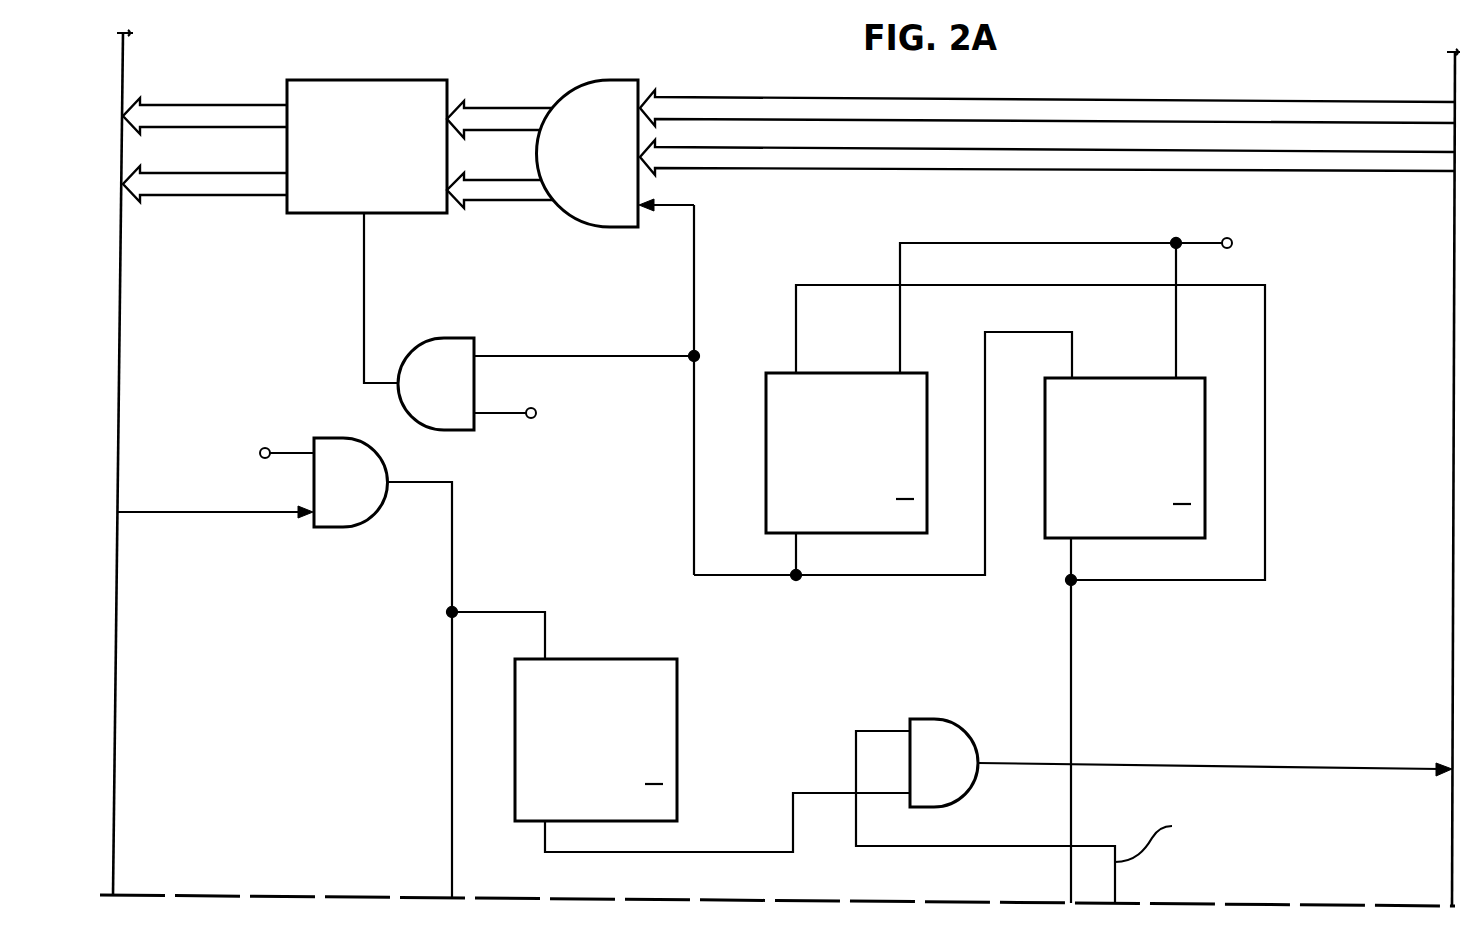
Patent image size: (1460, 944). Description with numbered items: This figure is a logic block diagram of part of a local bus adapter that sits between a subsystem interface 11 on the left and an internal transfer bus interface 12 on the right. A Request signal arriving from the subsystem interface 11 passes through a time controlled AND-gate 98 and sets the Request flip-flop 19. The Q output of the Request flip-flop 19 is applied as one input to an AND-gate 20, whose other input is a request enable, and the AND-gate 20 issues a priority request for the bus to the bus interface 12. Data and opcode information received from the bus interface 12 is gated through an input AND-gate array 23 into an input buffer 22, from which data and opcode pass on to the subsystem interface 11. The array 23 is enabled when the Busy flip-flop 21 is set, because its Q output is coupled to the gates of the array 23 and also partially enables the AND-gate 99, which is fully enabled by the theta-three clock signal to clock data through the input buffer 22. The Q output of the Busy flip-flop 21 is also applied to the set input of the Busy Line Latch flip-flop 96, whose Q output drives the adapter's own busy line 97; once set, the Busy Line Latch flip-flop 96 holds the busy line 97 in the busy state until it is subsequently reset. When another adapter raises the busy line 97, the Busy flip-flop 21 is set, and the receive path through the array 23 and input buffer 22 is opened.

The subsystem interface 11 is at (127, 318).
The internal transfer bus interface 12 is at (1450, 297).
The Request flip-flop 19 is at (620, 658).
The AND-gate 20 is at (958, 740).
The Busy flip-flop 21 is at (853, 380).
The input buffer 22 is at (377, 88).
The input AND-gate array 23 is at (583, 92).
The Busy Line Latch flip-flop 96 is at (1127, 387).
The busy line 97 is at (1265, 362).
The time controlled AND-gate 98 is at (335, 446).
The AND-gate 99 is at (430, 350).